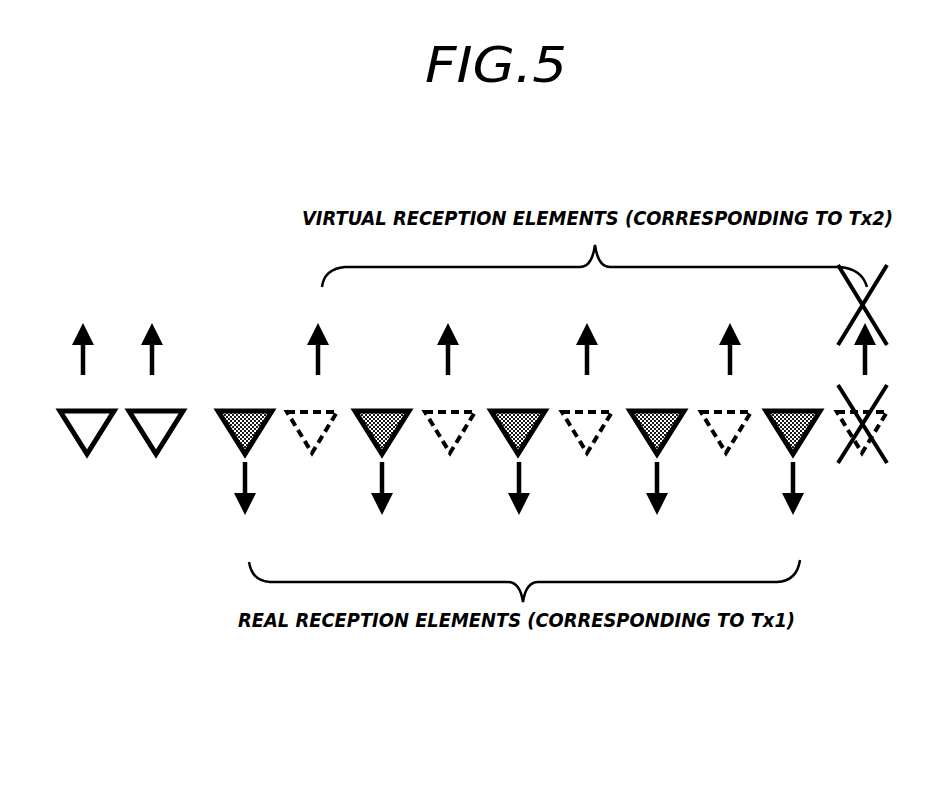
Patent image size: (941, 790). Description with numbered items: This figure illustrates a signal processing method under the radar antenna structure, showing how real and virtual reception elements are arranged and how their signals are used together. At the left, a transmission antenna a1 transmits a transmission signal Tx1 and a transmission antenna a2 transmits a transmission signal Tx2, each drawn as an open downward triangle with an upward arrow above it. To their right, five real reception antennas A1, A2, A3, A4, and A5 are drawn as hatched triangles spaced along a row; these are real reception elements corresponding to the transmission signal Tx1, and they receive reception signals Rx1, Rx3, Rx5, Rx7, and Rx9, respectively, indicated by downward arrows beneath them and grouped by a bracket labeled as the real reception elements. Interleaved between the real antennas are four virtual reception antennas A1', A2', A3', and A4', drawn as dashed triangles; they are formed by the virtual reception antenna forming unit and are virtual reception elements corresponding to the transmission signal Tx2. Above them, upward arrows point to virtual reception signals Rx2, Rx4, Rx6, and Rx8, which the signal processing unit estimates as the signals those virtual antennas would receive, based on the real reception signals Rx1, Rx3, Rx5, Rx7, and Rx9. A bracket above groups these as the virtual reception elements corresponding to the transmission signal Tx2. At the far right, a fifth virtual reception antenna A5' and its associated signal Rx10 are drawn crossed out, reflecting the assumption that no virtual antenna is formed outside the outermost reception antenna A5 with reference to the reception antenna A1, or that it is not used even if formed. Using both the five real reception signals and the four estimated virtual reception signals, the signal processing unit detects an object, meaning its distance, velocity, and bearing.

The transmission signal Tx1 is at (82, 335).
The transmission signal Tx2 is at (151, 335).
The transmission antenna a1 is at (87, 417).
The transmission antenna a2 is at (156, 417).
The real reception antenna A1 is at (245, 417).
The real reception antenna A2 is at (382, 417).
The real reception antenna A3 is at (518, 417).
The real reception antenna A4 is at (657, 417).
The real reception antenna A5 is at (793, 417).
The virtual reception antenna A1' is at (312, 417).
The virtual reception antenna A2' is at (450, 417).
The virtual reception antenna A3' is at (587, 417).
The virtual reception antenna A4' is at (726, 417).
The virtual reception antenna A5' is at (862, 417).
The reception signal Rx1 is at (244, 507).
The virtual reception signal Rx2 is at (318, 335).
The reception signal Rx3 is at (381, 507).
The virtual reception signal Rx4 is at (448, 335).
The reception signal Rx5 is at (518, 507).
The virtual reception signal Rx6 is at (587, 335).
The reception signal Rx7 is at (656, 507).
The virtual reception signal Rx8 is at (730, 335).
The reception signal Rx9 is at (793, 507).
The virtual reception element (removed) Rx10 is at (865, 335).